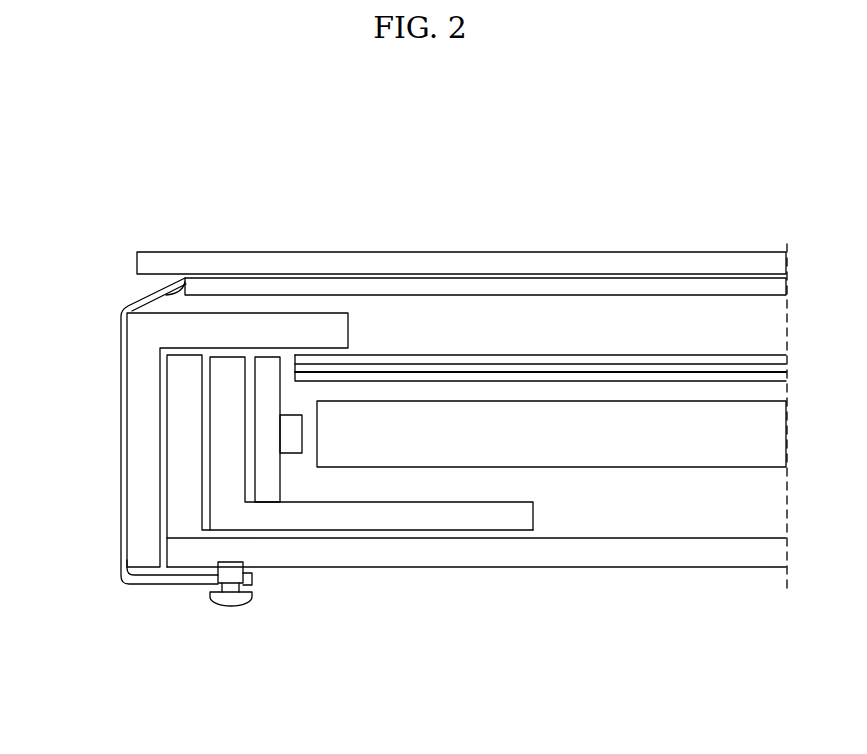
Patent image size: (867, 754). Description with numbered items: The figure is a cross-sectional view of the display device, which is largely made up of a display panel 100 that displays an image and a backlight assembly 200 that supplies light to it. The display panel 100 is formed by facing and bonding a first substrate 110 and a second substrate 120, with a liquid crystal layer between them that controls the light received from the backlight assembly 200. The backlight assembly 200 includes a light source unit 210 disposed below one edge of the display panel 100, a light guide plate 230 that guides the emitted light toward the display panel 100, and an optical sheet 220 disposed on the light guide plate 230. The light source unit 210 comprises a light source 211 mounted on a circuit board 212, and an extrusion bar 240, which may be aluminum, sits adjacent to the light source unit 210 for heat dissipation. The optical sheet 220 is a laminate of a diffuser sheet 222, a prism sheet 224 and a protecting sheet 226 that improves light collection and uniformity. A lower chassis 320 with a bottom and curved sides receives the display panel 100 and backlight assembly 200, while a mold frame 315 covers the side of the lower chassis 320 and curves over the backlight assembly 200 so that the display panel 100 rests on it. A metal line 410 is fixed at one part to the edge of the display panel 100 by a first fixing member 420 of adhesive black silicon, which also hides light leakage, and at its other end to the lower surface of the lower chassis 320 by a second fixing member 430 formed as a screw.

The display panel 100 is at (461, 226).
The first substrate 110 is at (335, 196).
The second substrate 120 is at (353, 260).
The backlight assembly 200 is at (476, 439).
The light source unit 210 is at (476, 512).
The light source 211 is at (290, 453).
The circuit board 212 is at (268, 493).
The optical sheet 220 is at (540, 269).
The diffuser sheet 222 is at (668, 378).
The prism sheet 224 is at (612, 368).
The protecting sheet 226 is at (543, 360).
The light guide plate 230 is at (473, 436).
The extrusion bar 240 is at (452, 517).
The mold frame 315 is at (138, 465).
The lower chassis 320 is at (523, 558).
The metal line 410 is at (122, 437).
The first fixing member 420 is at (168, 277).
The second fixing member 430 is at (228, 606).